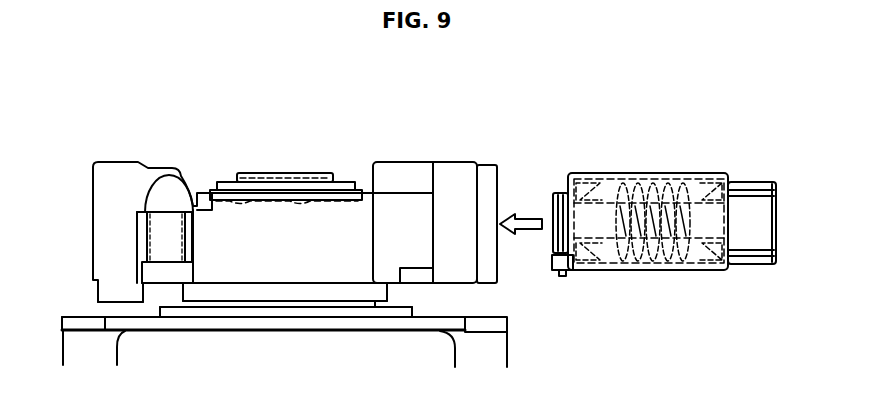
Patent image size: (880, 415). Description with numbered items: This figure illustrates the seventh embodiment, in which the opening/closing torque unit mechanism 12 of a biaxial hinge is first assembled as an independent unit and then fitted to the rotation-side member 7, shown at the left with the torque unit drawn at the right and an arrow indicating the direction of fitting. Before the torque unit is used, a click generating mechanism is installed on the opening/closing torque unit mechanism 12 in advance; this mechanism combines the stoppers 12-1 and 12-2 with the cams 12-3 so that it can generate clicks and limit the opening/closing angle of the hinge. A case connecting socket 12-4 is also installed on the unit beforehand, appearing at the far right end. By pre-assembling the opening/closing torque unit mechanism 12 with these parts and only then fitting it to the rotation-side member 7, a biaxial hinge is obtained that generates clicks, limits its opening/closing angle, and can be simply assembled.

The rotation-side member 7 is at (457, 193).
The opening/closing torque unit mechanism 12 is at (682, 265).
The stopper 12-1 is at (563, 278).
The stopper 12-2 is at (556, 262).
The cam 12-3 is at (717, 186).
The case connecting socket 12-4 is at (750, 218).